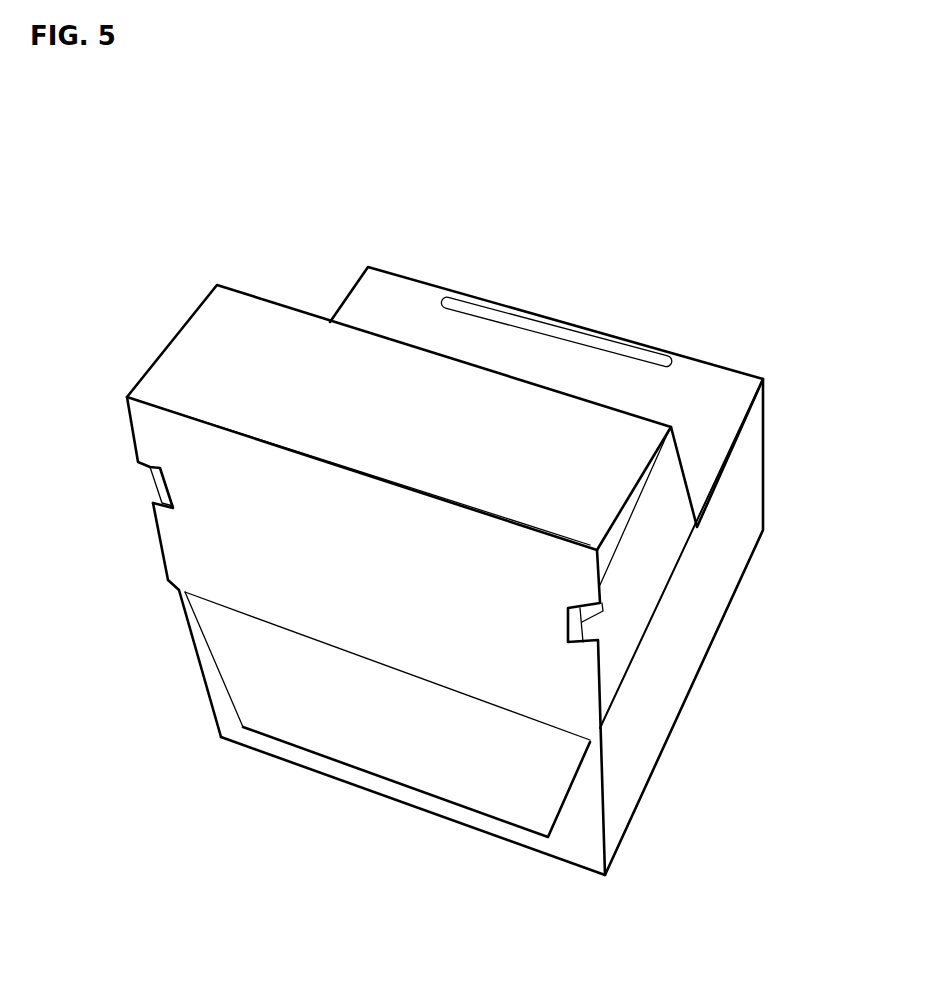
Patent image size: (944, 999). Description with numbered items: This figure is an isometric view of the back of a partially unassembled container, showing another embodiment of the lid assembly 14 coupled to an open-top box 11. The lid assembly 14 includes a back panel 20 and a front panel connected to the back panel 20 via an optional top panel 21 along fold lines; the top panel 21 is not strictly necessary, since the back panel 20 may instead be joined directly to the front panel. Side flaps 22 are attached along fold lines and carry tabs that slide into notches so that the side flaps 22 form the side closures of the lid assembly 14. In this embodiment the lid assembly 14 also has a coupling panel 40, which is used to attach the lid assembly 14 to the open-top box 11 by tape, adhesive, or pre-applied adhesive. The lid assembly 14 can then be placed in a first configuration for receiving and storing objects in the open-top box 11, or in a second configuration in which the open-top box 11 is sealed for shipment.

The open-top box 11 is at (620, 766).
The lid assembly 14 is at (275, 302).
The back panel 20 is at (550, 679).
The top panel 21 is at (587, 468).
The side flaps 22 is at (645, 562).
The coupling panel 40 is at (362, 733).